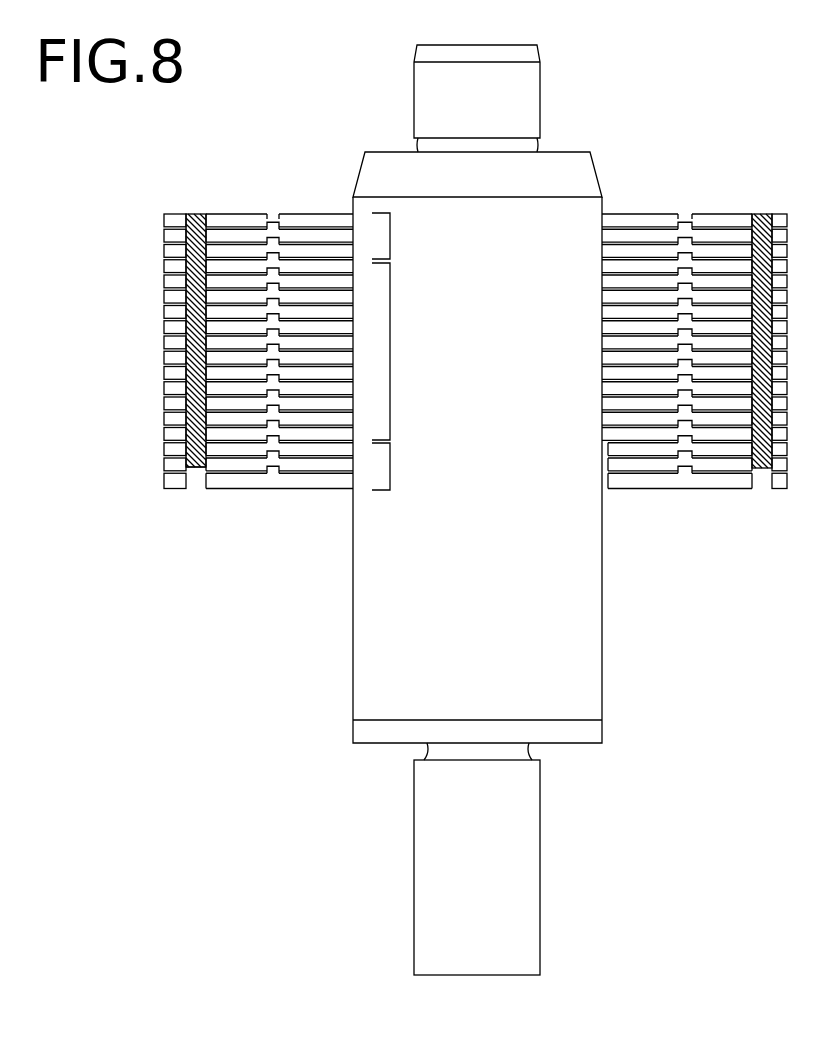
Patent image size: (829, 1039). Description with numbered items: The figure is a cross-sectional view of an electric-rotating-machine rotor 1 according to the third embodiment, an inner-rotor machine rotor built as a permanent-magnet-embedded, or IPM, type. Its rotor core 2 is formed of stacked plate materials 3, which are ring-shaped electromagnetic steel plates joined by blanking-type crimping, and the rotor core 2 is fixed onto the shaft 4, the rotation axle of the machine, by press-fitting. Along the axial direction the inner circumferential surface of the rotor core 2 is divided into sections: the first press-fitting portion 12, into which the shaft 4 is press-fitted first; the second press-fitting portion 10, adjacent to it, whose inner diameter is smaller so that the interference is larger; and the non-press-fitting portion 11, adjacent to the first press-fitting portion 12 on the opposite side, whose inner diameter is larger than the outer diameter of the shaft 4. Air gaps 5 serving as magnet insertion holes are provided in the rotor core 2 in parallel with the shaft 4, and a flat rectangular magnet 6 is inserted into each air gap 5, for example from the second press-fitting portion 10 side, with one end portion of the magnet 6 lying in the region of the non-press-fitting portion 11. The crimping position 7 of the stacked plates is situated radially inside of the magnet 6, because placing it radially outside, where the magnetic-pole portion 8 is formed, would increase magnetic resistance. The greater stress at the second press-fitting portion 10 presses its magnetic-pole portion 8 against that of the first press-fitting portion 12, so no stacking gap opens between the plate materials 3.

The electric-rotating-machine rotor 1 is at (660, 125).
The rotor core 2 is at (715, 197).
The plate material 3 is at (293, 218).
The shaft 4 is at (352, 690).
The air gap 5 is at (195, 482).
The magnet 6 is at (196, 212).
The crimping position 7 is at (272, 212).
The magnetic-pole portion 8 is at (168, 212).
The second press-fitting portion 10 is at (390, 235).
The non-press-fitting portion 11 is at (390, 466).
The first press-fitting portion 12 is at (390, 352).